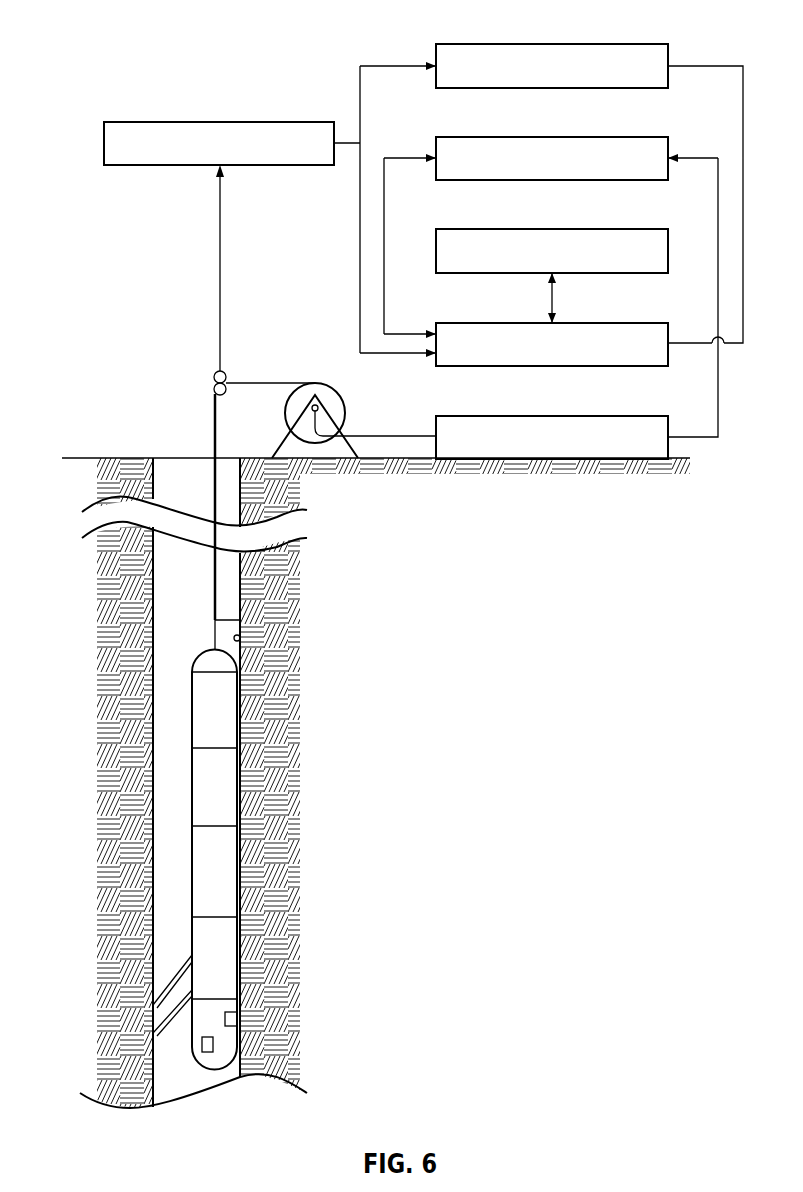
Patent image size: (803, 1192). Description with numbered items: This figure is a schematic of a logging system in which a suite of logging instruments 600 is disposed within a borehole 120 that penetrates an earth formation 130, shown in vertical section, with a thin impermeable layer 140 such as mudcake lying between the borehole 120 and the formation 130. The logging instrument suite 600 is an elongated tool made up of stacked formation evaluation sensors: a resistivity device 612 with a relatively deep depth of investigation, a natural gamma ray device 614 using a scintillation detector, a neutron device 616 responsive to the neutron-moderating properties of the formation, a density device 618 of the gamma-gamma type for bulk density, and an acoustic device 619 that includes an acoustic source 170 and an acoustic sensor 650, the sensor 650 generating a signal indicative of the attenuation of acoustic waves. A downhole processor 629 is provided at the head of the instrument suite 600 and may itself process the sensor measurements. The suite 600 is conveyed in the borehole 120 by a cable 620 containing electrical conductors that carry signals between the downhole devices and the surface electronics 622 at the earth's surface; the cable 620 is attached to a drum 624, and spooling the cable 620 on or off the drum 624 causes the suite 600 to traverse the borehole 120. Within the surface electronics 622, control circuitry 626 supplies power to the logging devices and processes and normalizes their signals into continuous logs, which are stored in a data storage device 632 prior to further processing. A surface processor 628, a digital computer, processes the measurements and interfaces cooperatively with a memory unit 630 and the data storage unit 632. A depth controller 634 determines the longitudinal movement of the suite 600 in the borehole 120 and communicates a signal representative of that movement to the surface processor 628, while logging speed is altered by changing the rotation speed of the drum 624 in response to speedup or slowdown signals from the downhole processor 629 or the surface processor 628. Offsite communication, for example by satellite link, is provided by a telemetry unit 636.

The surface electronics 622 is at (161, 42).
The depth controller 634 is at (168, 122).
The telemetry unit 636 is at (500, 44).
The data storage device 632 is at (500, 137).
The memory unit 630 is at (500, 229).
The surface processor 628 is at (500, 323).
The control circuitry 626 is at (500, 416).
The drum 624 is at (347, 413).
The earth formation 130 is at (125, 667).
The borehole 120 is at (247, 579).
The cable 620 is at (217, 620).
The impermeable medium layer 140 is at (240, 637).
The downhole processor 629 is at (223, 665).
The resistivity device 612 is at (220, 720).
The natural gamma ray device 614 is at (220, 775).
The logging instrument suite 600 is at (277, 852).
The neutron device 616 is at (220, 872).
The density device 618 is at (220, 953).
The acoustic sensor 650 is at (234, 1020).
The acoustic device 619 is at (225, 1050).
The acoustic source 170 is at (198, 1043).